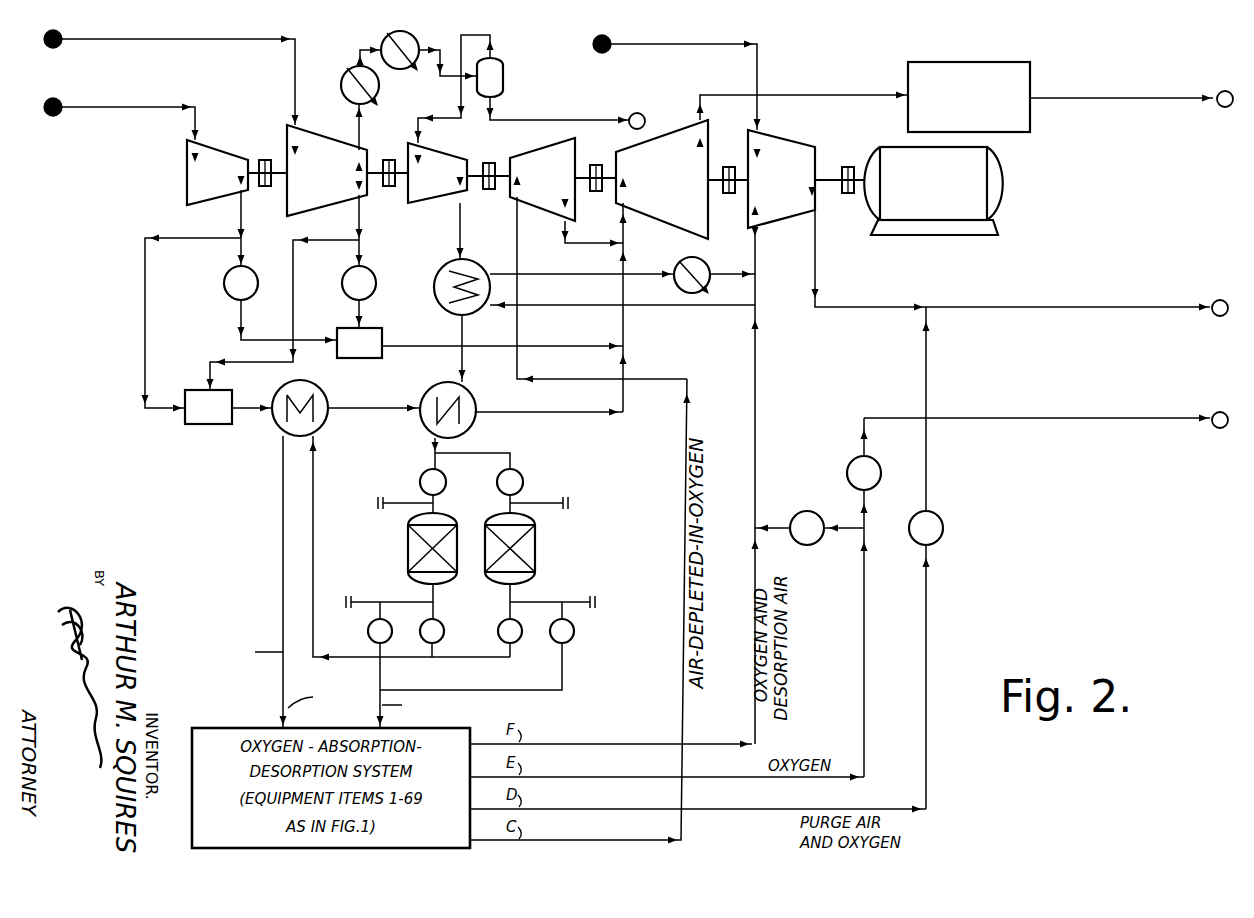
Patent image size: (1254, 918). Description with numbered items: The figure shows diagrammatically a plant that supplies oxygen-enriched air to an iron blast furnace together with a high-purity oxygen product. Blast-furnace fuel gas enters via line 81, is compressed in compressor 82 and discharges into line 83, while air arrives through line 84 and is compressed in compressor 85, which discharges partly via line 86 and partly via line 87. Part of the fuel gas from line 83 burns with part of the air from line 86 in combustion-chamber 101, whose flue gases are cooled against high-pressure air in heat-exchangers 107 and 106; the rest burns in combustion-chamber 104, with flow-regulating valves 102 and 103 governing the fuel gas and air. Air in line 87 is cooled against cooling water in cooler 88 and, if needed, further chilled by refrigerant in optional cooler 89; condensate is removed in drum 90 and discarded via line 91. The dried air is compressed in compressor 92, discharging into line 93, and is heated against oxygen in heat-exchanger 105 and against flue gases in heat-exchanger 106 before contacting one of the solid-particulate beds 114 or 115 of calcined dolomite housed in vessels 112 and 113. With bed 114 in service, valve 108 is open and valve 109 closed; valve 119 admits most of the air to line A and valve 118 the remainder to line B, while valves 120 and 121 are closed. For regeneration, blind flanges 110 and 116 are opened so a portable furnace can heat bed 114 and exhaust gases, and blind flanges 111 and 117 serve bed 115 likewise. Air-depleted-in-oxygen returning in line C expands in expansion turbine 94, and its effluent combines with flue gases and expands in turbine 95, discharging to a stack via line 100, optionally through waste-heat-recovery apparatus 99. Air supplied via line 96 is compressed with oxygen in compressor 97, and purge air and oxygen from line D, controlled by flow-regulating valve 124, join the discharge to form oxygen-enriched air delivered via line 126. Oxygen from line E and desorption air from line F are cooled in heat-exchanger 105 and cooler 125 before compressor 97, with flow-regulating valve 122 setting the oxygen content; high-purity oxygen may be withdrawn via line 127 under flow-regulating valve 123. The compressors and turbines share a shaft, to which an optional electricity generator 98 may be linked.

The line 81 is at (150, 108).
The compressor 82 is at (237, 172).
The line 83 is at (240, 222).
The line 84 is at (140, 40).
The compressor 85 is at (347, 170).
The line 86 is at (361, 218).
The line 87 is at (357, 117).
The cooler 88 is at (342, 86).
The optional cooler 89 is at (414, 40).
The drum 90 is at (459, 89).
The line 91 is at (503, 122).
The compressor 92 is at (459, 173).
The line 93 is at (462, 224).
The expansion turbine 94 is at (598, 260).
The turbine 95 is at (762, 252).
The line 96 is at (677, 46).
The compressor 97 is at (677, 437).
The optional electricity generator 98 is at (893, 145).
The optional waste-heat-recovery apparatus 99 is at (908, 72).
The line 100 is at (1118, 96).
The combustion-chamber 101 is at (210, 424).
The flow-regulating valve 102 is at (224, 283).
The flow-regulating valve 103 is at (342, 285).
The combustion-chamber 104 is at (345, 360).
The heat-exchanger 105 is at (434, 280).
The heat-exchanger 106 is at (435, 392).
The heat-exchanger 107 is at (326, 428).
The valve 108 is at (422, 476).
The valve 109 is at (523, 474).
The blind flange 110 is at (389, 503).
The blind flange 111 is at (556, 503).
The vessel 112 is at (409, 566).
The vessel 113 is at (534, 566).
The solid-particulate bed 114 is at (420, 530).
The solid-particulate bed 115 is at (515, 532).
The blind flange 116 is at (375, 605).
The blind flange 117 is at (570, 605).
The valve 118 is at (368, 632).
The valve 119 is at (458, 628).
The valve 120 is at (518, 641).
The valve 121 is at (572, 641).
The flow-regulating valve 122 is at (796, 514).
The flow-regulating valve 123 is at (852, 464).
The flow-regulating valve 124 is at (944, 522).
The cooler 125 is at (710, 262).
The line 126 is at (1075, 306).
The line 127 is at (1095, 416).